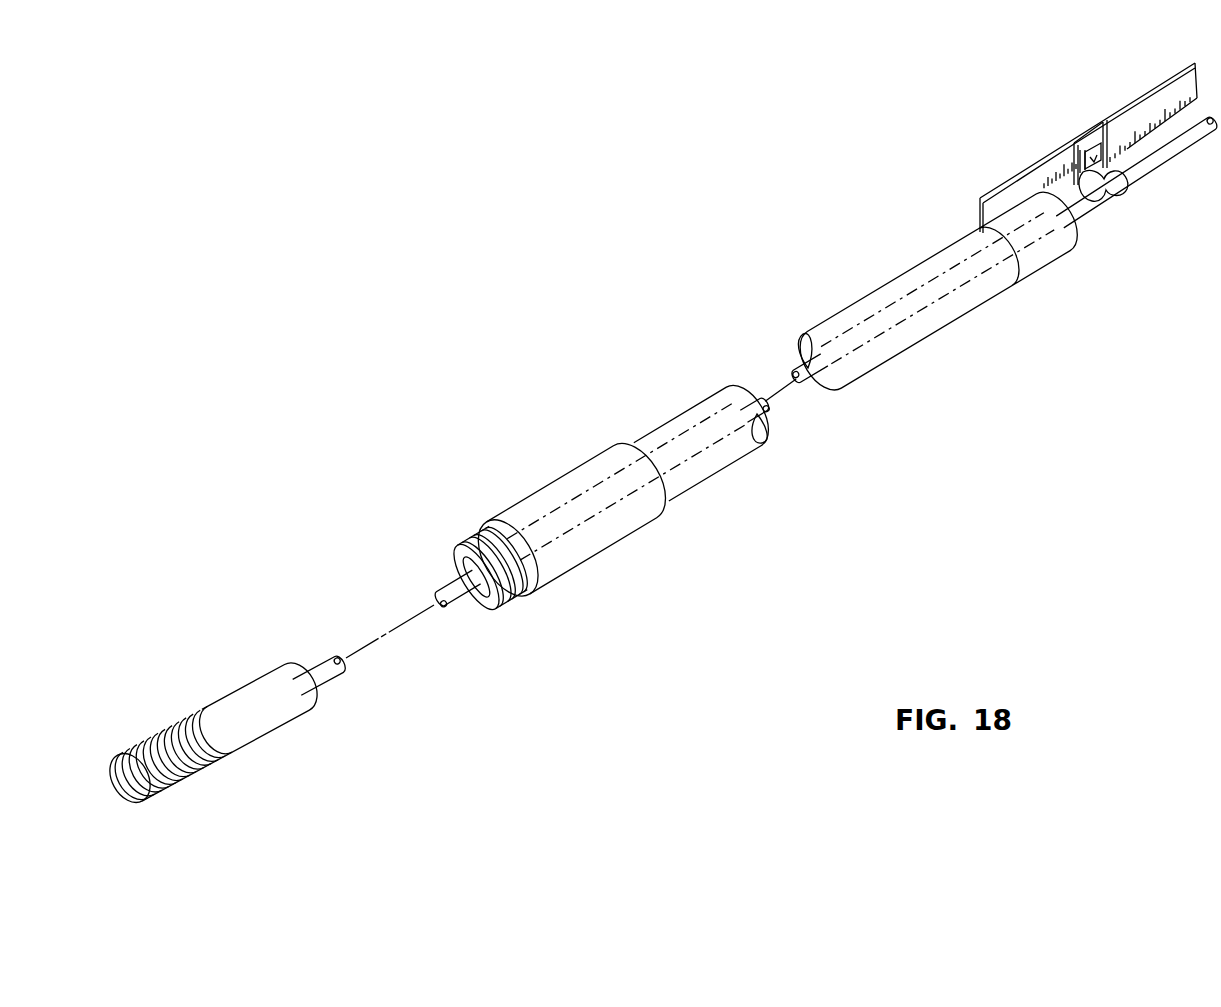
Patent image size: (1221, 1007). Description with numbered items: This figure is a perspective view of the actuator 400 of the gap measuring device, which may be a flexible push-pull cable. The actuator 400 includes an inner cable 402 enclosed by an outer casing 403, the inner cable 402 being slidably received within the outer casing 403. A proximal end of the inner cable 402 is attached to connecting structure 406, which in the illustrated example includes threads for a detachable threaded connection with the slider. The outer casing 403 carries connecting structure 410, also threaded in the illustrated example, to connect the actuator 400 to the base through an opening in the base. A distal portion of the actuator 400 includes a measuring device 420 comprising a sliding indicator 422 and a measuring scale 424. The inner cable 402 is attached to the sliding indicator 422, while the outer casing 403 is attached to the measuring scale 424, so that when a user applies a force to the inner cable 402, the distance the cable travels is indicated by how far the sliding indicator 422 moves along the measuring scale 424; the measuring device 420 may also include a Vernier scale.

The actuator 400 is at (740, 518).
The inner cable 402 is at (333, 670).
The outer casing 403 is at (900, 350).
The connecting structure 406 is at (252, 727).
The connecting structure 410 is at (515, 593).
The measuring device 420 is at (1050, 110).
The sliding indicator 422 is at (1120, 200).
The measuring scale 424 is at (1002, 200).